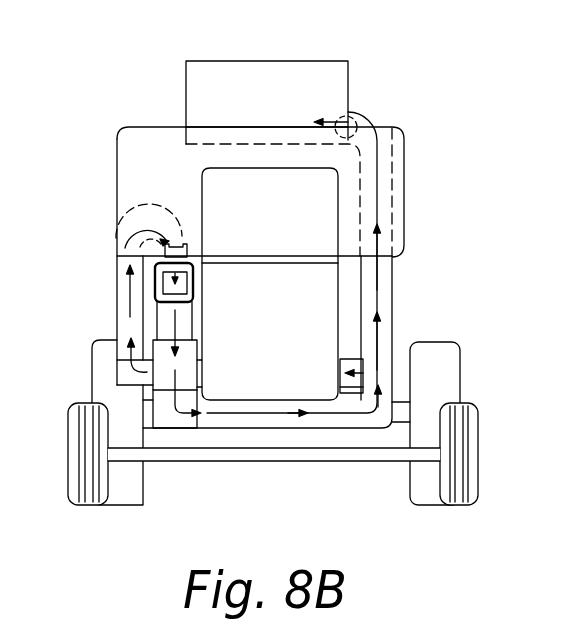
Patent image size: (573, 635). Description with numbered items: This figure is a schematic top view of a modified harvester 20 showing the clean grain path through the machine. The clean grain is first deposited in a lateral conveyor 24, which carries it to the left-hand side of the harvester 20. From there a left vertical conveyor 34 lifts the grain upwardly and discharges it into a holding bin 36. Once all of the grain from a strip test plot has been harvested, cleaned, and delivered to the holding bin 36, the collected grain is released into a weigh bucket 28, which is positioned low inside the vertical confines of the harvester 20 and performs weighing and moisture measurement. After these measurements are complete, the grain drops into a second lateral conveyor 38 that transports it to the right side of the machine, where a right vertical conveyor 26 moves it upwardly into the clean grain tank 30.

The harvester 20 is at (274, 260).
The lateral conveyor 24 is at (350, 362).
The right vertical conveyor 26 is at (382, 280).
The weigh bucket 28 is at (167, 372).
The clean grain tank 30 is at (304, 32).
The left vertical conveyor 34 is at (128, 328).
The holding bin 36 is at (191, 243).
The second lateral conveyor 38 is at (347, 420).